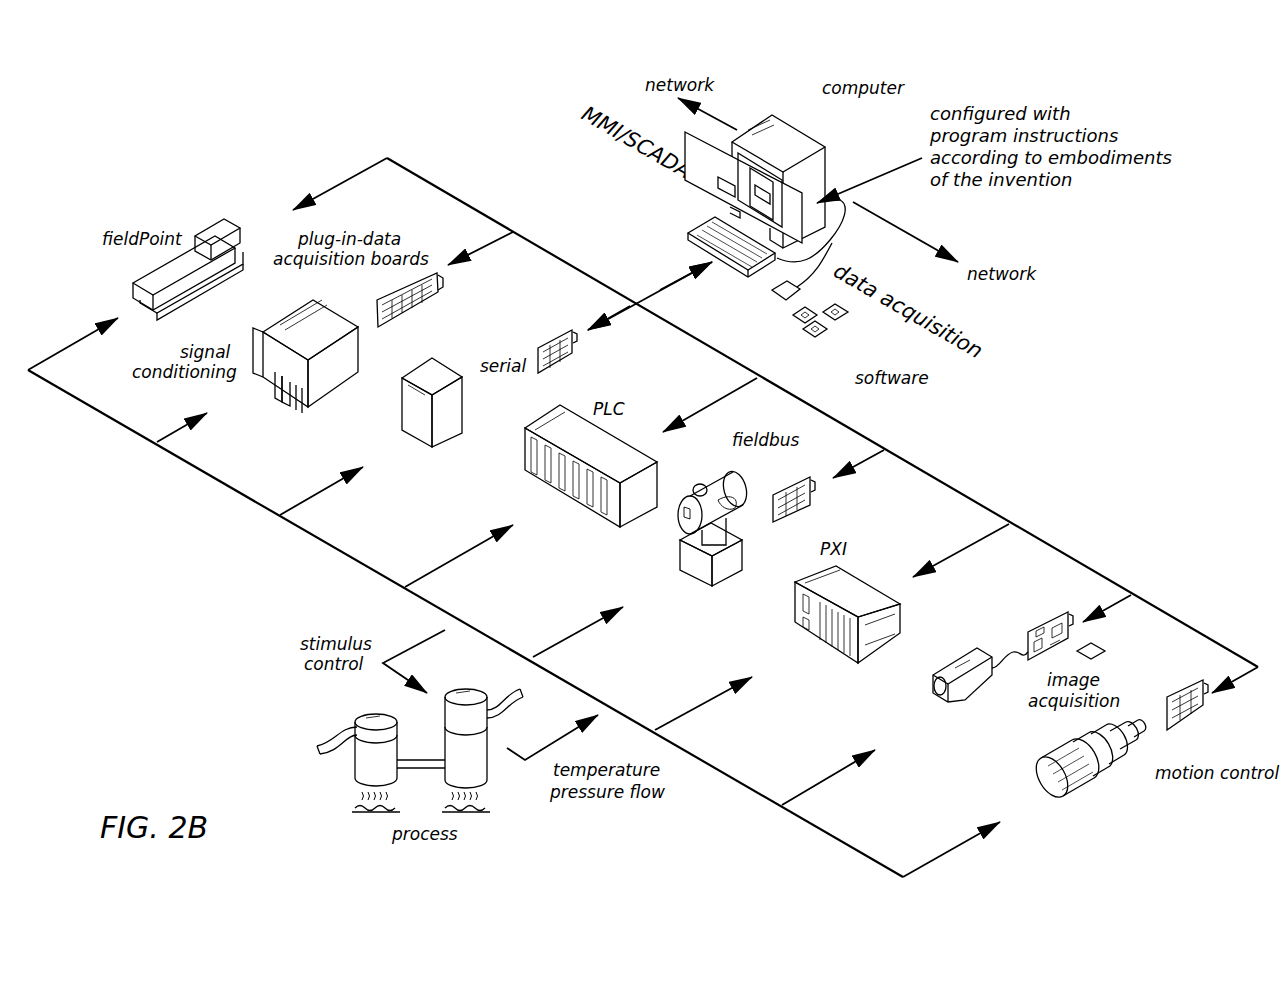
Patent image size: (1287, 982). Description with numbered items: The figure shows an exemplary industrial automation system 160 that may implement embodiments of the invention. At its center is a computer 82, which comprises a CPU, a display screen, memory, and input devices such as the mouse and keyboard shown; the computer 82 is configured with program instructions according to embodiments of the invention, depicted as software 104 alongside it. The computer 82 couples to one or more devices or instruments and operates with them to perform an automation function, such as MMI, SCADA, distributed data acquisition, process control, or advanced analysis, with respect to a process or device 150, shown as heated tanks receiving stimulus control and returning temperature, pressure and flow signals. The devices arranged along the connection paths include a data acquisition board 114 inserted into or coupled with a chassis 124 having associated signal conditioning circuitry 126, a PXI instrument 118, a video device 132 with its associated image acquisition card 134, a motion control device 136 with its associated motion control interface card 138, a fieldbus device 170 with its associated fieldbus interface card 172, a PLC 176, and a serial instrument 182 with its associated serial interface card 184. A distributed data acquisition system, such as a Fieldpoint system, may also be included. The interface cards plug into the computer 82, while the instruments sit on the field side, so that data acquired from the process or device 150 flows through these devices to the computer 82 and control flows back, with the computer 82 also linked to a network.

The computer 82 is at (793, 130).
The software 104 is at (823, 337).
The data acquisition board 114 is at (408, 312).
The PXI instrument 118 is at (850, 580).
The chassis 124 is at (282, 328).
The signal conditioning circuitry 126 is at (278, 390).
The video device 132 is at (965, 652).
The image acquisition card 134 is at (1040, 622).
The motion control device 136 is at (1077, 783).
The motion control interface card 138 is at (1190, 720).
The process or device 150 is at (330, 740).
The industrial automation system 160 is at (1078, 300).
The fieldbus device 170 is at (697, 572).
The fieldbus interface card 172 is at (790, 483).
The PLC 176 is at (542, 482).
The serial instrument 182 is at (413, 430).
The serial interface card 184 is at (552, 342).